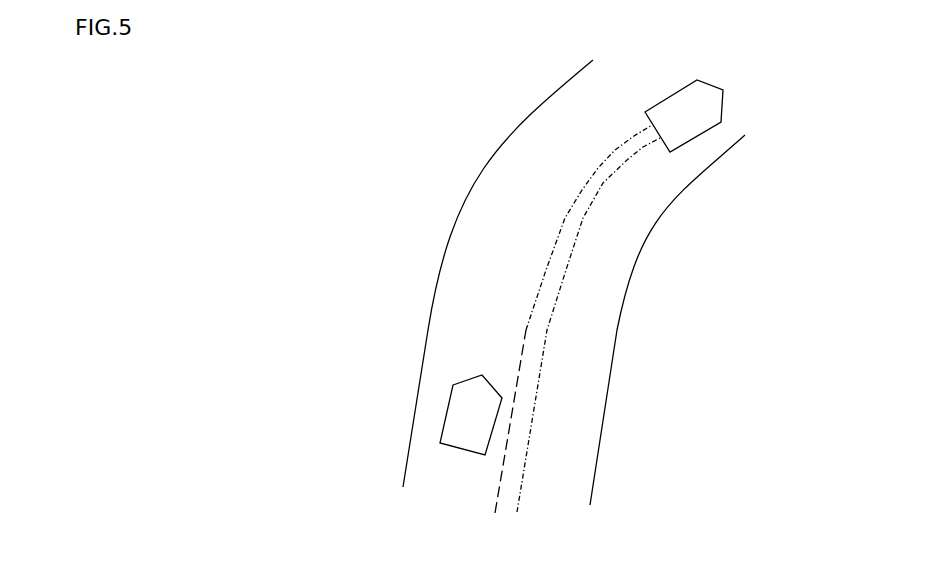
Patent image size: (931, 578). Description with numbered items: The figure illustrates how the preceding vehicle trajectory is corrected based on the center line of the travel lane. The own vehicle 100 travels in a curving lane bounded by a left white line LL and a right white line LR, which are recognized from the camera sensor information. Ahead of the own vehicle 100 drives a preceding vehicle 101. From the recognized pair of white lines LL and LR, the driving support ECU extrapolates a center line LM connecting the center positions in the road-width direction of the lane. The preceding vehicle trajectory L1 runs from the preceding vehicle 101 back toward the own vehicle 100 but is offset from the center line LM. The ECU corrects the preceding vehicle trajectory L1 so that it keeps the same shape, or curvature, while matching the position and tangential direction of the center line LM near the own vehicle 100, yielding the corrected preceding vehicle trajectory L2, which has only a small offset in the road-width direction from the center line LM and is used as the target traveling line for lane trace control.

The own vehicle 100 is at (450, 408).
The other vehicle (preceding vehicle) 101 is at (662, 99).
The left white line LL is at (405, 468).
The right white line LR is at (595, 478).
The center line of the travel lane LM is at (584, 299).
The preceding vehicle trajectory L1 is at (588, 215).
The corrected preceding vehicle trajectory L2 is at (592, 170).